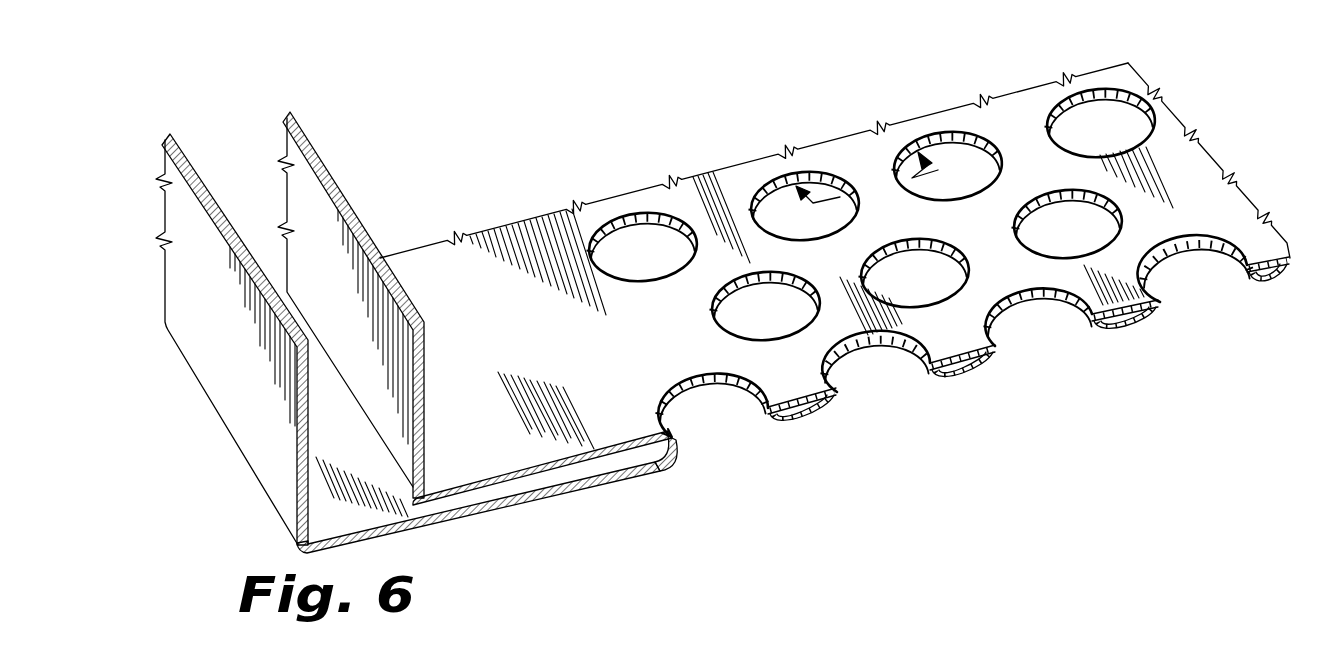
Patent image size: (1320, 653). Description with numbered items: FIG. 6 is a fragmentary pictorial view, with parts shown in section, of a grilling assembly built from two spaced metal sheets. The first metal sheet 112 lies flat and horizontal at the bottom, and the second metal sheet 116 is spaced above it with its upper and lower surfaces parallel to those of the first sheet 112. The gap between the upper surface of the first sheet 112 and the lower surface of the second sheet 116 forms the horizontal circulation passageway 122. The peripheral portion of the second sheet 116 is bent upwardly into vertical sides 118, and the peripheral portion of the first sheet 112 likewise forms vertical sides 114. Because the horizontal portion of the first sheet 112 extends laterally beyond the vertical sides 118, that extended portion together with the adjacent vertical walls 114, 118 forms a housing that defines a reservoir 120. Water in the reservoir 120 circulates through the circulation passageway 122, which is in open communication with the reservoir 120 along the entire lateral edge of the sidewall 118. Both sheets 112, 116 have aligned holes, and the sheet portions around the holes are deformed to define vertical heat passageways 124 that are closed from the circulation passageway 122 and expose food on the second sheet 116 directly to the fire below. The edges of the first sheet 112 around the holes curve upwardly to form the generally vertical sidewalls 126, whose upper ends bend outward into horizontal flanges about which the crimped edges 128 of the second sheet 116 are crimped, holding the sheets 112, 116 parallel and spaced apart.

The first metal sheet 112 is at (620, 474).
The vertical sides of first sheet 114 is at (239, 348).
The second metal sheet 116 is at (543, 338).
The vertical sides of second sheet 118 is at (354, 302).
The reservoir 120 is at (327, 432).
The circulation passageway 122 is at (982, 370).
The heat passageways 124 is at (745, 320).
The sidewalls of heat passageways 126 is at (664, 449).
The crimped edges 128 is at (673, 434).